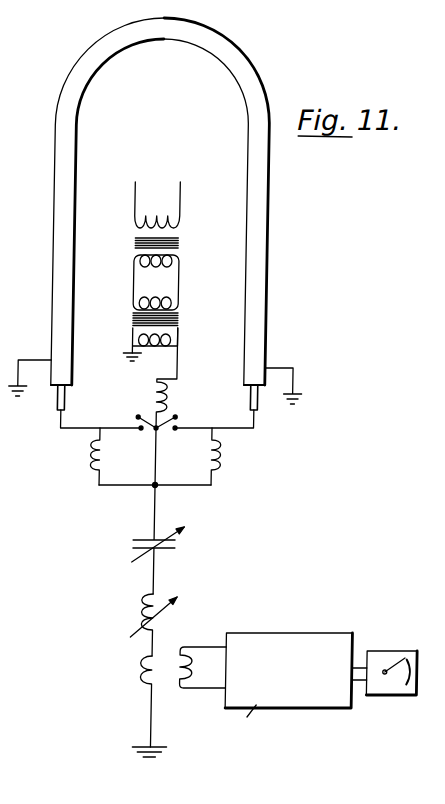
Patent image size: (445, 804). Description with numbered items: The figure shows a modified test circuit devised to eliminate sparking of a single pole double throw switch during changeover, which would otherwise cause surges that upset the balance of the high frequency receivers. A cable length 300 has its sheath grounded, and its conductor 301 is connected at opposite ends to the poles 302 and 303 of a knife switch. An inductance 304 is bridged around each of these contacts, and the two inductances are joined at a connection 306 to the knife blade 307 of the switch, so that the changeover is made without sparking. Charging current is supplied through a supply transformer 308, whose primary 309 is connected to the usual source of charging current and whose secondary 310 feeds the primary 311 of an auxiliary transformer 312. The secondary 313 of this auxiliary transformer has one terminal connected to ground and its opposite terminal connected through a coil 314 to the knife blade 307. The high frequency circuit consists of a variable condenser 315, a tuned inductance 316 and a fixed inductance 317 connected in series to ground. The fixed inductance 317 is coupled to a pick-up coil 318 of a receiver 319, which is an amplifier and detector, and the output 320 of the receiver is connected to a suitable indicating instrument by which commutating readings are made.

The cable length 300 is at (264, 281).
The conductor 301 is at (58, 404).
The pole of the knife switch 302 is at (130, 441).
The pole of the knife switch 303 is at (182, 441).
The inductance 304 is at (92, 466).
The connection point 306 is at (159, 487).
The knife blade 307 is at (168, 413).
The supply transformer 308 is at (174, 247).
The primary 309 is at (131, 222).
The secondary 310 is at (137, 261).
The primary 311 is at (166, 302).
The auxiliary transformer 312 is at (138, 318).
The secondary 313 is at (176, 340).
The coil 314 is at (167, 402).
The variable condenser 315 is at (177, 547).
The tuned inductance 316 is at (163, 615).
The fixed inductance 317 is at (151, 668).
The pick-up coil 318 is at (193, 663).
The receiver 319 is at (281, 645).
The output 320 is at (380, 665).